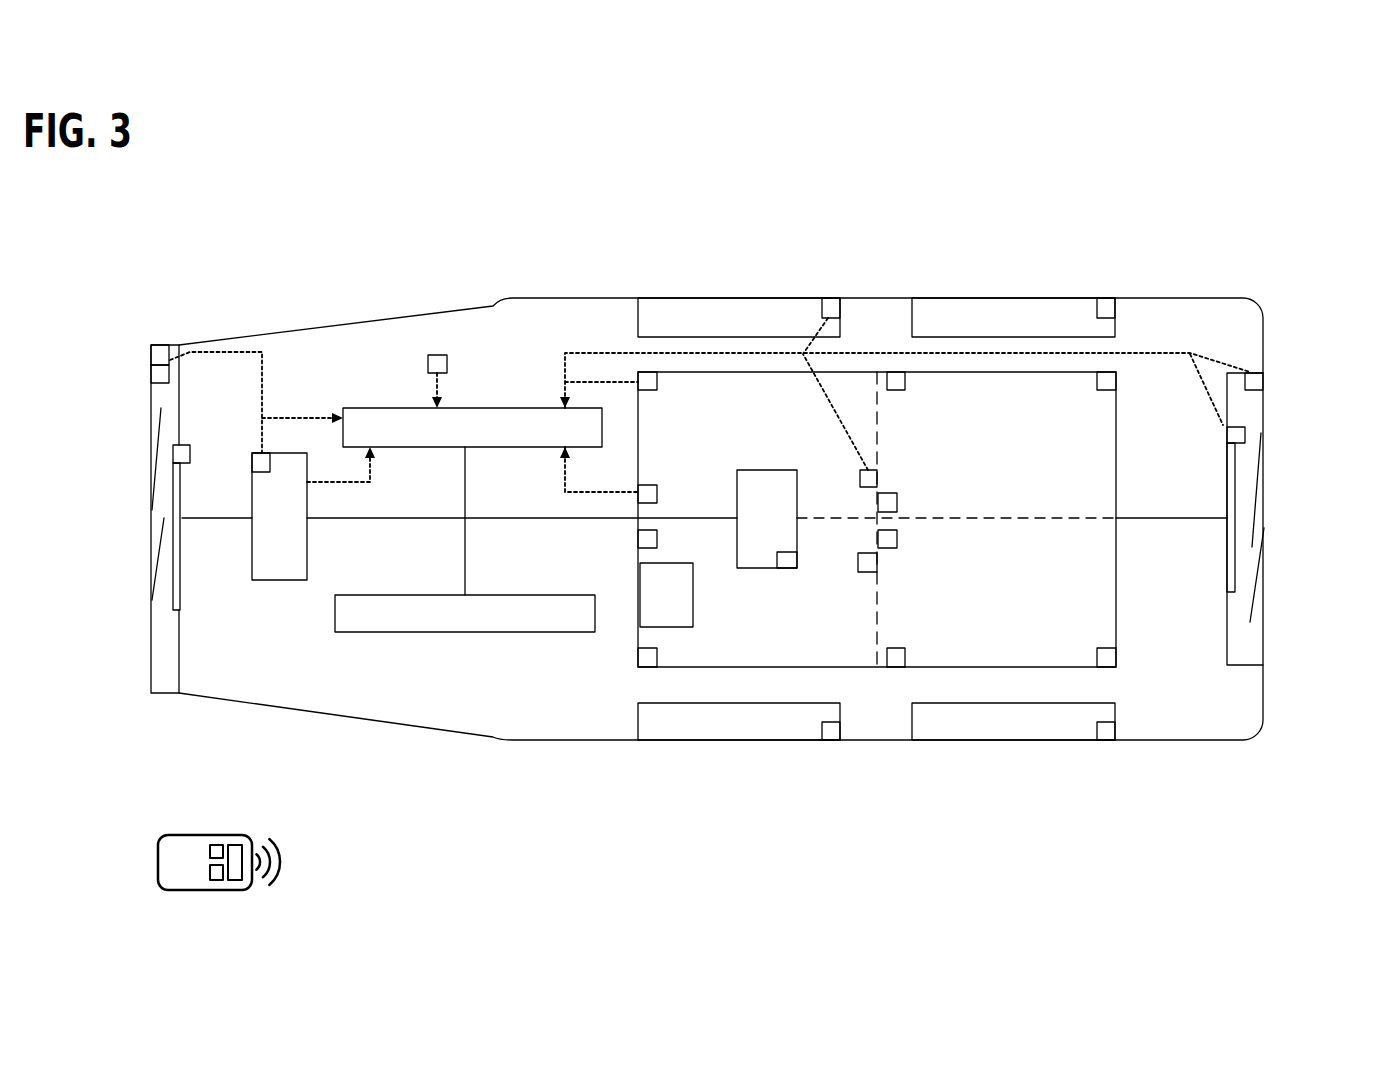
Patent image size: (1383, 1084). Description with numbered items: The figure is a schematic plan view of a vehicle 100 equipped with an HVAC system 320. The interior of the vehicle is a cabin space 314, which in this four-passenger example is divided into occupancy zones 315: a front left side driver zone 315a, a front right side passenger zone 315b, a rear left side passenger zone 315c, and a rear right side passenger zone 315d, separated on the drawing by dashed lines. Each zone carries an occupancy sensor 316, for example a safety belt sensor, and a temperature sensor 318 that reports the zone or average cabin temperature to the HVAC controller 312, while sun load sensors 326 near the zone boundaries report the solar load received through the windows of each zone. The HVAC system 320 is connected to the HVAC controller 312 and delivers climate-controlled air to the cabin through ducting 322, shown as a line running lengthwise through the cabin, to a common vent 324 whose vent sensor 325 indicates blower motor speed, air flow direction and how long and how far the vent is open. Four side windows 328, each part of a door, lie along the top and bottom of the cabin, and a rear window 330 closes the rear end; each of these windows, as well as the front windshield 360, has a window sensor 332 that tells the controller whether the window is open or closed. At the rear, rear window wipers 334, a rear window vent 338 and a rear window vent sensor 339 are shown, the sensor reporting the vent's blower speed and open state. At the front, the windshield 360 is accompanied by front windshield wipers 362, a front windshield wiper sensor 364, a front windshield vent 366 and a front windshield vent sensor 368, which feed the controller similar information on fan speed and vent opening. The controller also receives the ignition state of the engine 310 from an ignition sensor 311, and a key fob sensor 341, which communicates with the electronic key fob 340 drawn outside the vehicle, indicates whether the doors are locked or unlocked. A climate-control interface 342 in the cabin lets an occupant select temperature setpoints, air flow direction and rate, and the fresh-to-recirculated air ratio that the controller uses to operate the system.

The vehicle 100 is at (1298, 190).
The engine 310 is at (313, 513).
The ignition sensor 311 is at (252, 460).
The HVAC controller 312 is at (796, 474).
The cabin space 314 is at (850, 667).
The occupancy zones 315 is at (1116, 465).
The front left side driver zone 315a is at (760, 613).
The front right side passenger zone 315b is at (759, 428).
The rear left side passenger zone 315c is at (999, 613).
The rear right side passenger zone 315d is at (999, 426).
The occupancy sensor 316 is at (645, 392).
The temperature sensor 318 is at (657, 487).
The HVAC system 320 is at (465, 613).
The ducting 322 is at (665, 518).
The vent 324 is at (767, 519).
The vent sensor 325 is at (790, 555).
The sun load sensor 326 is at (860, 470).
The side windows 328 is at (876, 519).
The rear window 330 is at (1227, 648).
The window sensor 332 is at (151, 373).
The rear window wipers 334 is at (1258, 500).
The rear window vent 338 is at (1227, 532).
The rear window vent sensor 339 is at (1227, 438).
The electronic key fob 340 is at (190, 835).
The key fob sensor 341 is at (437, 355).
The climate-control interface 342 is at (666, 595).
The front windshield 360 is at (162, 675).
The front windshield wipers 362 is at (152, 585).
The front windshield wiper sensor 364 is at (151, 357).
The front windshield vent 366 is at (181, 558).
The front windshield vent sensor 368 is at (190, 456).